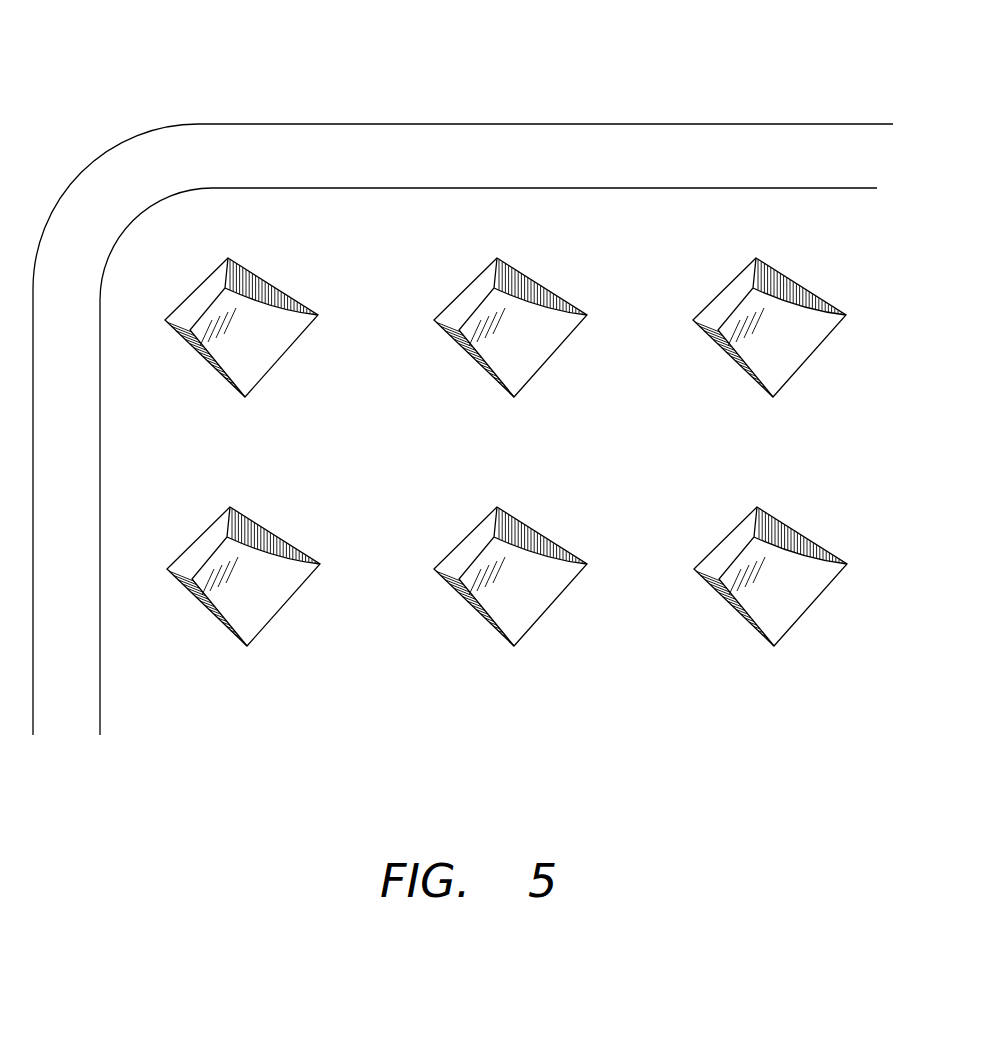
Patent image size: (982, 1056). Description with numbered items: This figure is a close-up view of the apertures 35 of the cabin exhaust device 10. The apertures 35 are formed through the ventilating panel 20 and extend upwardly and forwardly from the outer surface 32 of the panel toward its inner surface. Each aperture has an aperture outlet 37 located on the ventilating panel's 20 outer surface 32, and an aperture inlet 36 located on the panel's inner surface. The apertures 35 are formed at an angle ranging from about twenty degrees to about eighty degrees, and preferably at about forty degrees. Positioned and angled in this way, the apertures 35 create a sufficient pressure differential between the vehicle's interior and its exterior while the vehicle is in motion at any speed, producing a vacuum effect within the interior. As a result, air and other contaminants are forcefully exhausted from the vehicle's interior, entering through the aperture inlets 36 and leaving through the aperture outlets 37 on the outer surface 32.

The cabin exhaust device 10 is at (455, 116).
The ventilating panel 20 is at (283, 138).
The outer surface 32 is at (670, 215).
The apertures 35 is at (520, 270).
The aperture inlets 36 is at (735, 293).
The aperture outlets 37 is at (792, 332).